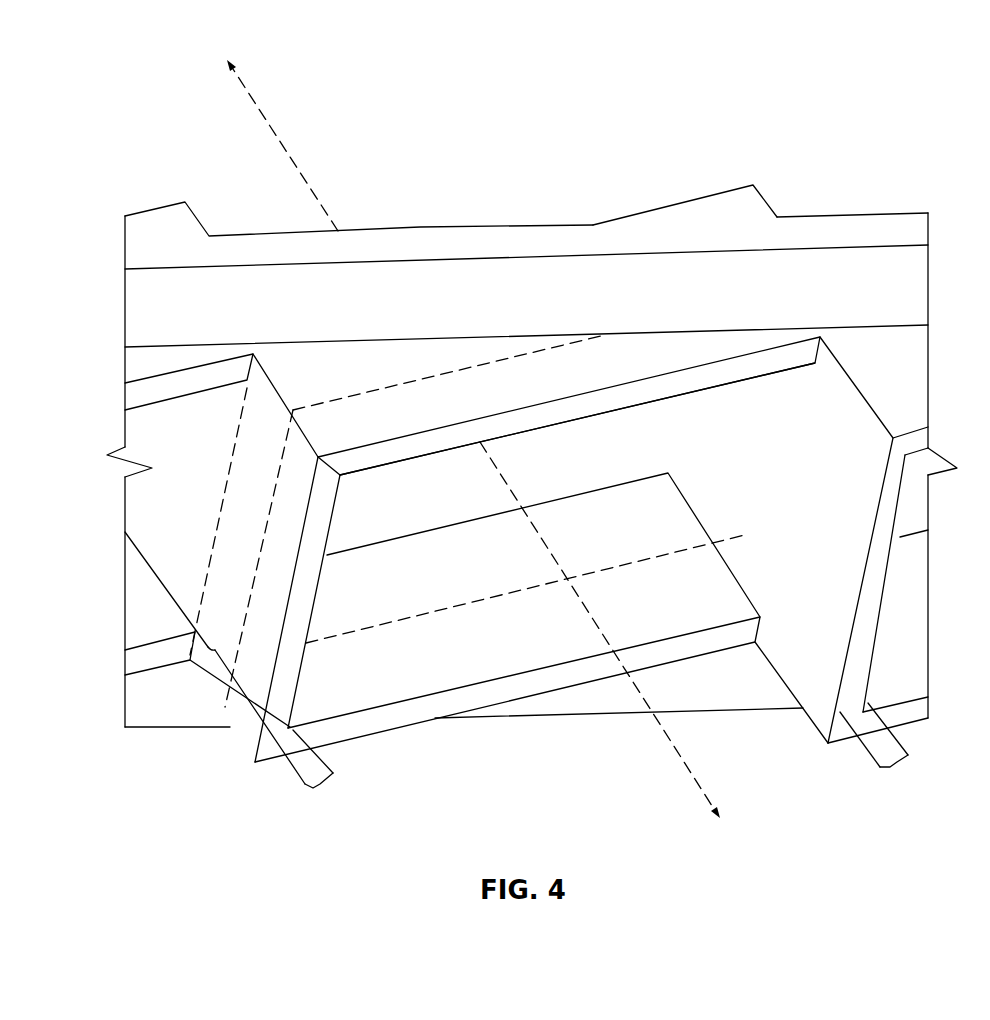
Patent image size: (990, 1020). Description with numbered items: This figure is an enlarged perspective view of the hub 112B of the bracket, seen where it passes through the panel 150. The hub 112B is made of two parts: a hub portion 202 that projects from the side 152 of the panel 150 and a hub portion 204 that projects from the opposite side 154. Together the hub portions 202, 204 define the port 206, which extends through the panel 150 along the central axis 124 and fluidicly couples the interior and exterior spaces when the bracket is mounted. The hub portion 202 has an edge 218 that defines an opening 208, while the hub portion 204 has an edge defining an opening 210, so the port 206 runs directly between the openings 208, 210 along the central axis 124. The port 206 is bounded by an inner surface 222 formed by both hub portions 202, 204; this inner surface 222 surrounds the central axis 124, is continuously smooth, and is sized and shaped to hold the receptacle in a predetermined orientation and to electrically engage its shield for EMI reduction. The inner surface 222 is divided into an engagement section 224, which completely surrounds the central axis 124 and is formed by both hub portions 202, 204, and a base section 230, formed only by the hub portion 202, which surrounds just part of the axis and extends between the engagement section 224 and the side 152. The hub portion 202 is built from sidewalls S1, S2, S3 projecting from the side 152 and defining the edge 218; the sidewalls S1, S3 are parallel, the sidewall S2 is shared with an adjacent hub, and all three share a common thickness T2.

The panel 150 is at (910, 228).
The side 152 is at (532, 315).
The side 154 is at (818, 208).
The hub portion 204 is at (715, 215).
The hub 112B is at (352, 308).
The central axis 124 is at (695, 778).
The hub portion 202 is at (403, 422).
The port 206 is at (132, 562).
The opening 208 is at (406, 684).
The opening 210 is at (619, 466).
The edge 218 is at (327, 733).
The inner surface 222 is at (407, 588).
The engagement section 224 is at (238, 693).
The base section 230 is at (188, 660).
The sidewall S1 is at (146, 363).
The sidewall S2 is at (328, 532).
The sidewall S3 is at (472, 700).
The thickness T2 is at (612, 761).